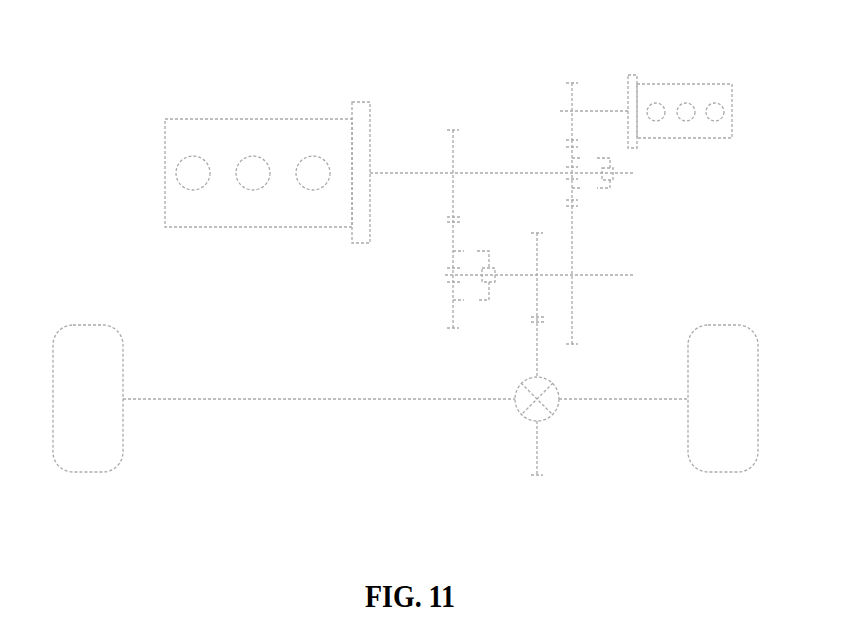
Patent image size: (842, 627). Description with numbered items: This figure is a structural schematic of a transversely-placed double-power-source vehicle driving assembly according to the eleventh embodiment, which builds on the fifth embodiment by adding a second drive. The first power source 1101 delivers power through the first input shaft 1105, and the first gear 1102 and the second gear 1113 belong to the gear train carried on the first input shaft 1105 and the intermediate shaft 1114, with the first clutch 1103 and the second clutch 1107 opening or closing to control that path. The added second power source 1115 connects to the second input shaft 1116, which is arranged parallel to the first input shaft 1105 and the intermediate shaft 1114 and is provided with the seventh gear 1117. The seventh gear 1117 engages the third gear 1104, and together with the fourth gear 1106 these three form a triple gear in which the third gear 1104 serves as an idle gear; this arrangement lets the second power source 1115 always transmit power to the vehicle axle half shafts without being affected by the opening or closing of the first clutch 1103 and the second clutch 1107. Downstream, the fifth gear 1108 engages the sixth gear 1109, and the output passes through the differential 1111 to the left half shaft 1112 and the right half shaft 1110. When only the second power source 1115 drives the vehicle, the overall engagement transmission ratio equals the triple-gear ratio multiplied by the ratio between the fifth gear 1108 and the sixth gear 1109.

The first power source 1101 is at (290, 132).
The first gear 1102 is at (453, 130).
The first clutch 1103 is at (477, 250).
The third gear 1104 is at (568, 153).
The first input shaft 1105 is at (477, 173).
The fourth gear 1106 is at (573, 258).
The second clutch 1107 is at (611, 184).
The fifth gear 1108 is at (537, 297).
The sixth gear 1109 is at (535, 373).
The right half shaft 1110 is at (607, 399).
The differential 1111 is at (533, 417).
The left half shaft 1112 is at (400, 399).
The second gear 1113 is at (453, 320).
The intermediate shaft 1114 is at (447, 276).
The second power source 1115 is at (697, 95).
The second input shaft 1116 is at (612, 110).
The seventh gear 1117 is at (573, 95).